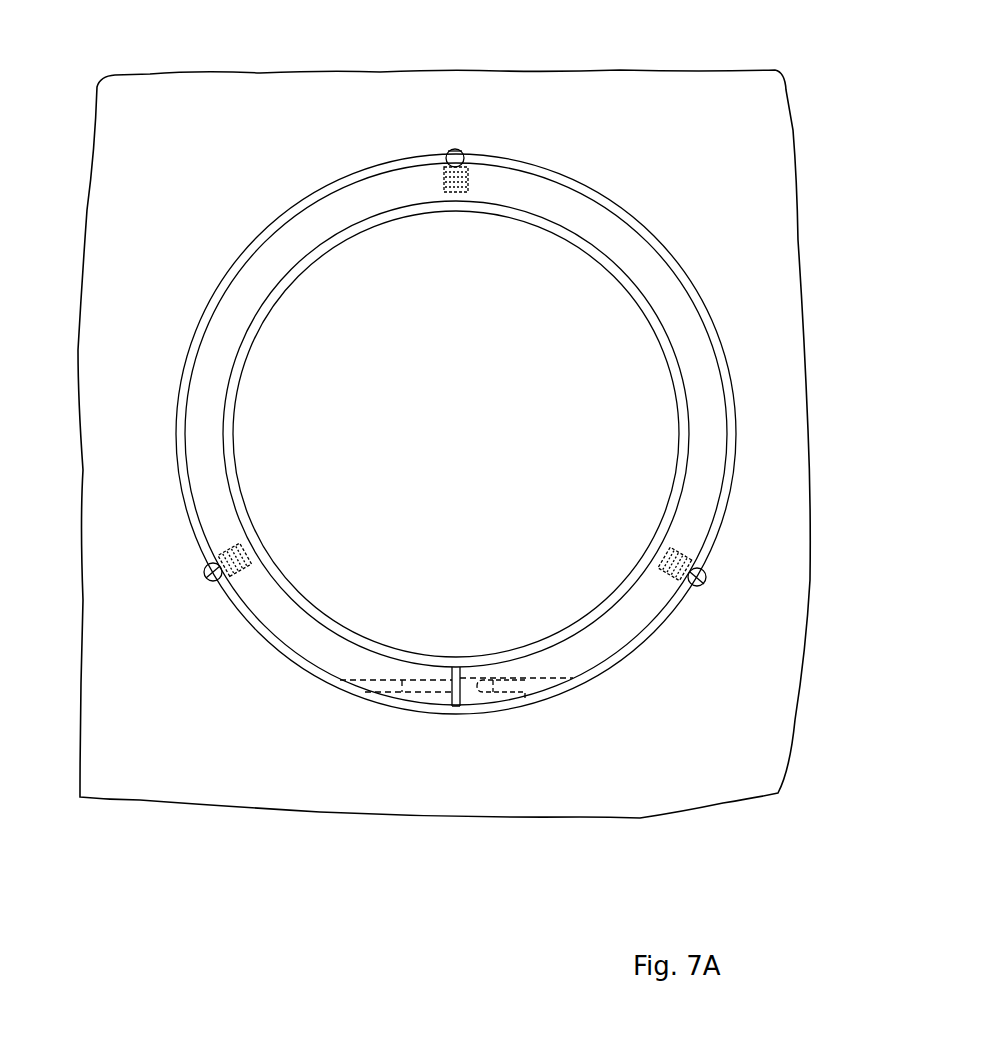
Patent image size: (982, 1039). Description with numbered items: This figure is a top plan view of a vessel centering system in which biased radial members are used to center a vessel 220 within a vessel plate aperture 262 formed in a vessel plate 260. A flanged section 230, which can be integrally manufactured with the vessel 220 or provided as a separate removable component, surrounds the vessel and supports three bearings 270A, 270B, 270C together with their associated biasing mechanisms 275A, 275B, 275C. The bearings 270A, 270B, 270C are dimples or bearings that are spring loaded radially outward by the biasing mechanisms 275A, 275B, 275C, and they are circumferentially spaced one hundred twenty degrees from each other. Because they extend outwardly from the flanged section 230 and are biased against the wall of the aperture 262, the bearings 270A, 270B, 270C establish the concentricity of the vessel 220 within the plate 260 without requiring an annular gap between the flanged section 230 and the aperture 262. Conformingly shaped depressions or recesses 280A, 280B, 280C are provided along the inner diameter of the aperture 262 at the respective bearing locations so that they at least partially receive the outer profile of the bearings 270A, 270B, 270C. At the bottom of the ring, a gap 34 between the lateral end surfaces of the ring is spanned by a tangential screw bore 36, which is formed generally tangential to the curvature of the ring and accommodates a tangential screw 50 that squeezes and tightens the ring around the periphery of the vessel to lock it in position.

The vessel plate 260 is at (235, 107).
The vessel plate aperture 262 is at (608, 198).
The vessel 220 is at (275, 297).
The flanged section 230 is at (675, 298).
The bearing 270A is at (455, 150).
The bearing 270B is at (205, 582).
The bearing 270C is at (700, 582).
The recess 280A is at (443, 153).
The recess 280B is at (212, 585).
The recess 280C is at (697, 590).
The biasing mechanism 275A is at (455, 192).
The biasing mechanism 275B is at (245, 558).
The biasing mechanism 275C is at (665, 552).
The gap 34 is at (457, 707).
The tangential screw bore 36 is at (523, 698).
The tangential screw 50 is at (427, 693).